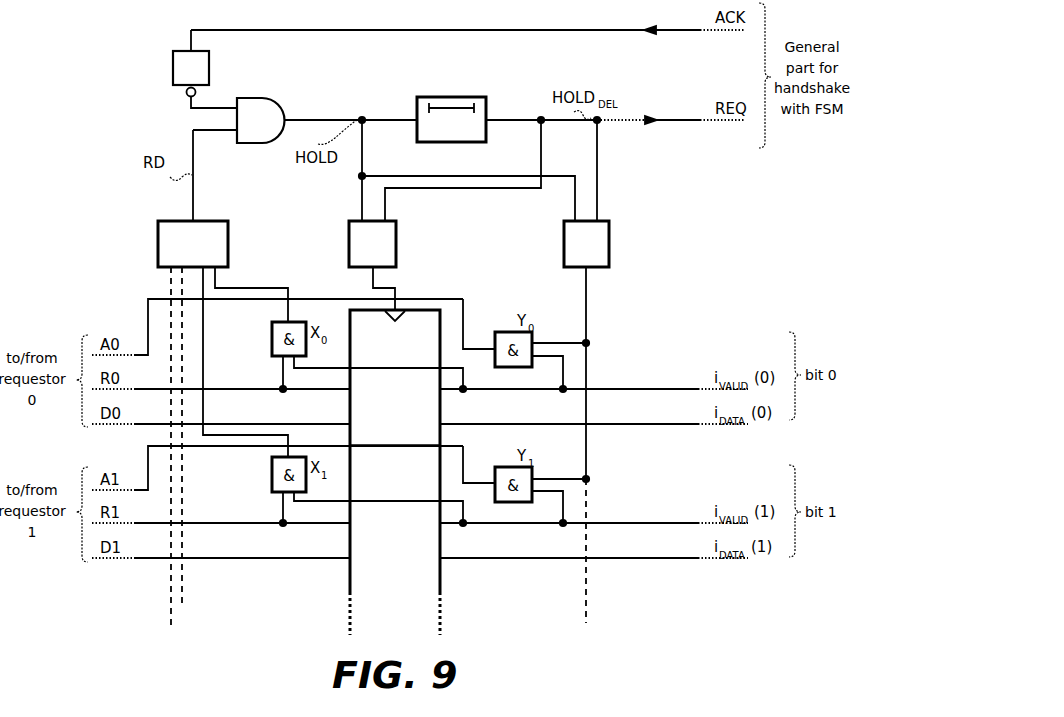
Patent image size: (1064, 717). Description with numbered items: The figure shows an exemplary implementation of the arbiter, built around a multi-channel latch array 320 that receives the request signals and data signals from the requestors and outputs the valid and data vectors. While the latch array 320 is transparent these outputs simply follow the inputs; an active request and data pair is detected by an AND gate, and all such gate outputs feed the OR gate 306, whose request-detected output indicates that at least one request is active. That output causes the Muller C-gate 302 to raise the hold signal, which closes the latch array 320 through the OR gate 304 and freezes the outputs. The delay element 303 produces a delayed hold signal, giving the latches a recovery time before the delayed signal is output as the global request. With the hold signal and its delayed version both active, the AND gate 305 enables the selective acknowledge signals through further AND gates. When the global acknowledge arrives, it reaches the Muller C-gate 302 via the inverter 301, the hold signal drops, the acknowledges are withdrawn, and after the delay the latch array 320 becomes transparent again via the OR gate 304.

The inverter 301 is at (152, 69).
The Muller C-gate 302 is at (305, 111).
The delay element 303 is at (451, 131).
The OR gate 304 is at (423, 266).
The AND gate 305 is at (642, 422).
The OR gate 306 is at (223, 377).
The latch array 320 is at (395, 472).